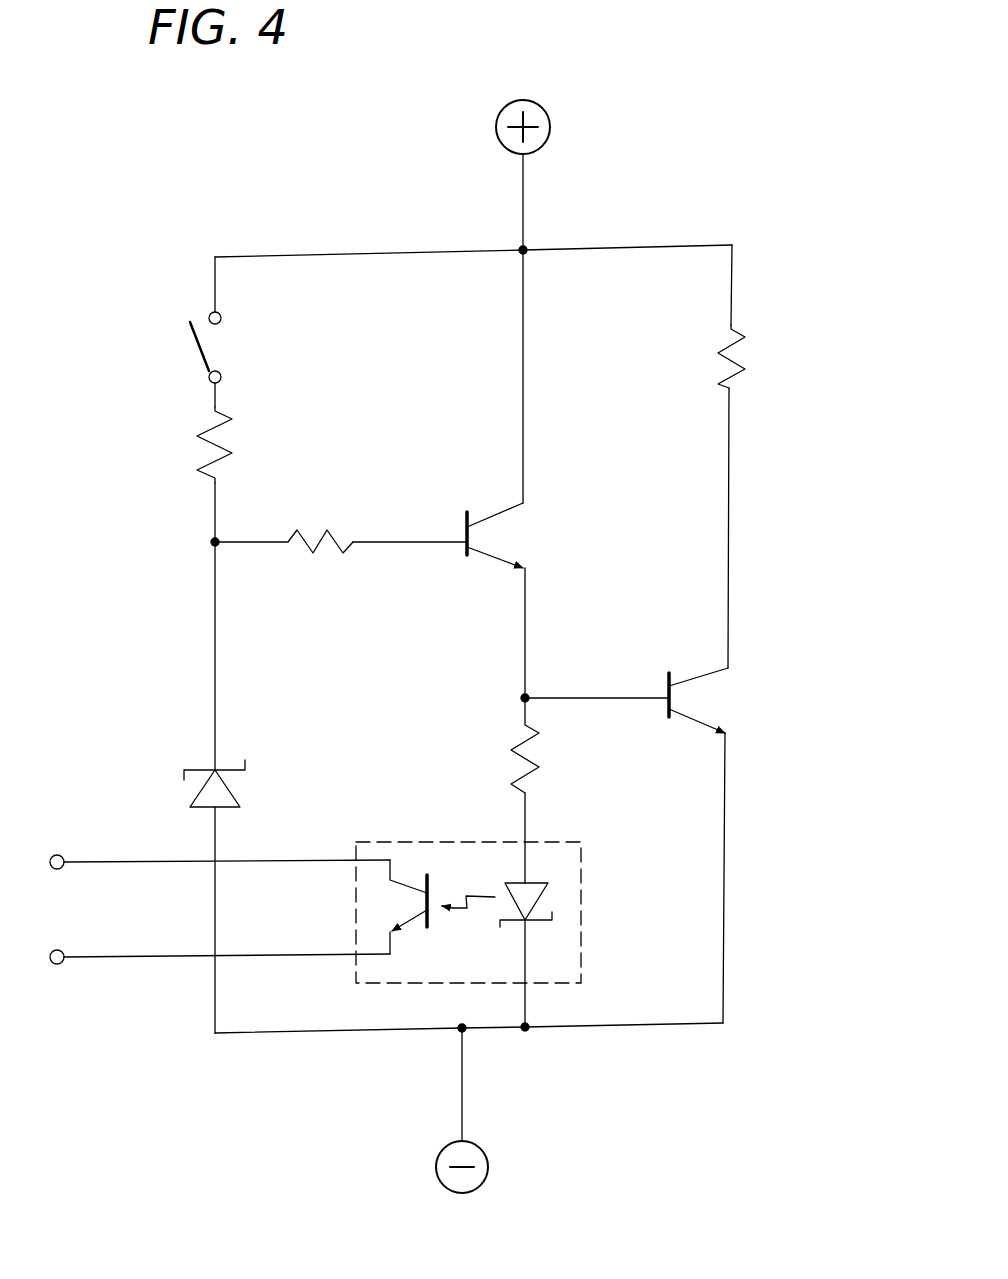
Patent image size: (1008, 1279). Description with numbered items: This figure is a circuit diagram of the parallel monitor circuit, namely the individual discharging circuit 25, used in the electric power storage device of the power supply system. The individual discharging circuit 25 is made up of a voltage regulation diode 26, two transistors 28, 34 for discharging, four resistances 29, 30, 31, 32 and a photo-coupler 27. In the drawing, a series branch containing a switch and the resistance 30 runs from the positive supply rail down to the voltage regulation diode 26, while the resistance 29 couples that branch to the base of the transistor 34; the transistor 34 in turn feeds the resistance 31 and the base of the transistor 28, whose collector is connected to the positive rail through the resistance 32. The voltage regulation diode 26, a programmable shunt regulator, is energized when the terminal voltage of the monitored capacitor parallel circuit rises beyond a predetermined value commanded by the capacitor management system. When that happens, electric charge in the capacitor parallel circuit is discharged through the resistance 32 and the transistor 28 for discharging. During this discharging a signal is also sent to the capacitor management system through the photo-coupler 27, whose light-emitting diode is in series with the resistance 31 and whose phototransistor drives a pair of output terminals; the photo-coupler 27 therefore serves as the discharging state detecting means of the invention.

The individual discharging circuit 25 is at (188, 262).
The voltage regulation diode 26 is at (197, 790).
The photo-coupler 27 is at (570, 983).
The transistor for discharging 28 is at (688, 712).
The resistance 29 is at (337, 536).
The resistance 30 is at (228, 443).
The resistance 31 is at (535, 752).
The resistance 32 is at (740, 355).
The transistor for discharging 34 is at (492, 549).